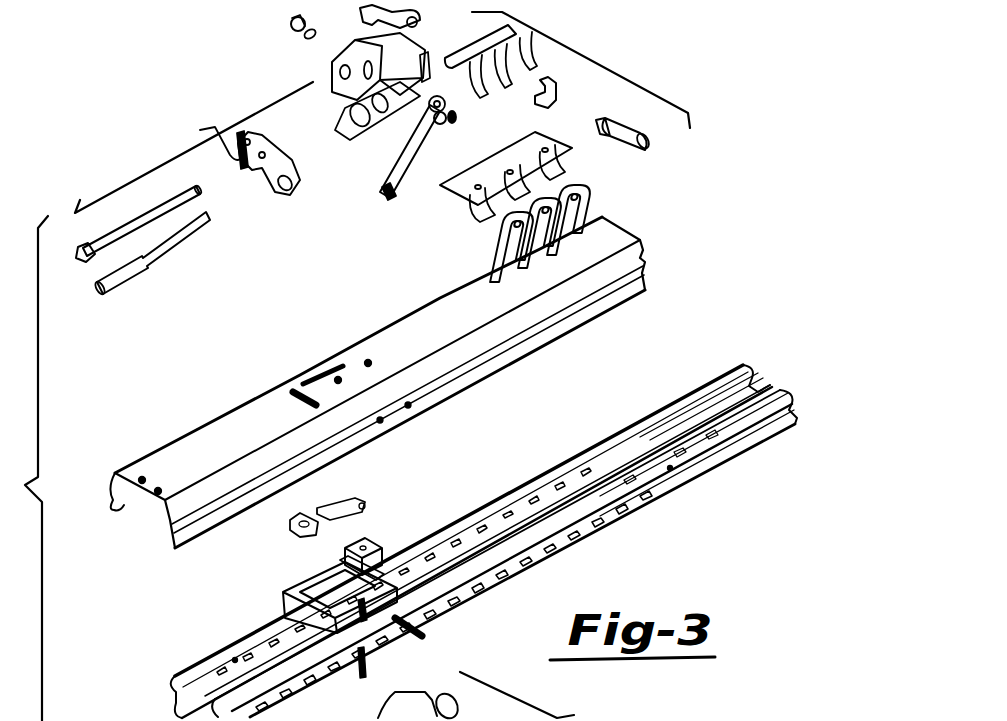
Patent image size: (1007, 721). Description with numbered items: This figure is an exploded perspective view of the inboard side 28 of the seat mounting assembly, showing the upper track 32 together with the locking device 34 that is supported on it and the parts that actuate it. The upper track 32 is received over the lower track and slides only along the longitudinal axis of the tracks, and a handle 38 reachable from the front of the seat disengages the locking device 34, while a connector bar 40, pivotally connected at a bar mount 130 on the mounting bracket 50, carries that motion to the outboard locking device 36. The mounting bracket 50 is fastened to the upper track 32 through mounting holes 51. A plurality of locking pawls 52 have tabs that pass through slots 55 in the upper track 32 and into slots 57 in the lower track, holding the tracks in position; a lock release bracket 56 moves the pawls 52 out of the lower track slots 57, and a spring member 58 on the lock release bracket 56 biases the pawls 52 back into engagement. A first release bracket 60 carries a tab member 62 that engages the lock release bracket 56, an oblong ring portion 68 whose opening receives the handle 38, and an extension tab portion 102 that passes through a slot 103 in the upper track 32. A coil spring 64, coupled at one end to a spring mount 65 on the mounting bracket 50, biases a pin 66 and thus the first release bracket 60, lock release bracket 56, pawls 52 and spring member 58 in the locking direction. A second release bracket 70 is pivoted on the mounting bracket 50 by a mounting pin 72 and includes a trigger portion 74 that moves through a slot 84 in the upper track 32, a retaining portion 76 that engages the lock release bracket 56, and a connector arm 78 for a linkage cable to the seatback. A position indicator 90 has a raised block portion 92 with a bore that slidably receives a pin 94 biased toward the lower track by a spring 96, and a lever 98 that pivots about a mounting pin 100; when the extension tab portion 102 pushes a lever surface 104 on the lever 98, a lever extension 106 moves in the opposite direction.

The inboard side 28 is at (681, 254).
The upper track 32 is at (166, 505).
The locking device 34 is at (626, 78).
The locking device 36 is at (577, 717).
The handle 38 is at (128, 272).
The connector bar 40 is at (613, 148).
The mounting bracket 50 is at (333, 100).
The mounting holes 51 is at (368, 360).
The locking pawls 52 is at (592, 212).
The slots 55 is at (355, 432).
The lock release bracket 56 is at (455, 205).
The slots 57 is at (607, 520).
The spring member 58 is at (538, 38).
The first release bracket 60 is at (258, 175).
The tab member 62 is at (242, 135).
The coil spring 64 is at (360, 9).
The spring mount 65 is at (428, 62).
The pin 66 is at (156, 207).
The oblong ring portion 68 is at (286, 196).
The second release bracket 70 is at (362, 213).
The mounting pin 72 is at (284, 38).
The trigger portion 74 is at (392, 142).
The retaining portion 76 is at (440, 128).
The connector arm 78 is at (453, 118).
The slot 84 is at (325, 368).
The position indicator 90 is at (371, 533).
The raised block portion 92 is at (380, 546).
The pin 94 is at (362, 678).
The spring 96 is at (368, 628).
The lever 98 is at (314, 540).
The mounting pin 100 is at (426, 633).
The extension tab portion 102 is at (200, 130).
The slot 103 is at (298, 390).
The lever surface 104 is at (293, 510).
The lever extension 106 is at (358, 503).
The bar mount 130 is at (558, 93).